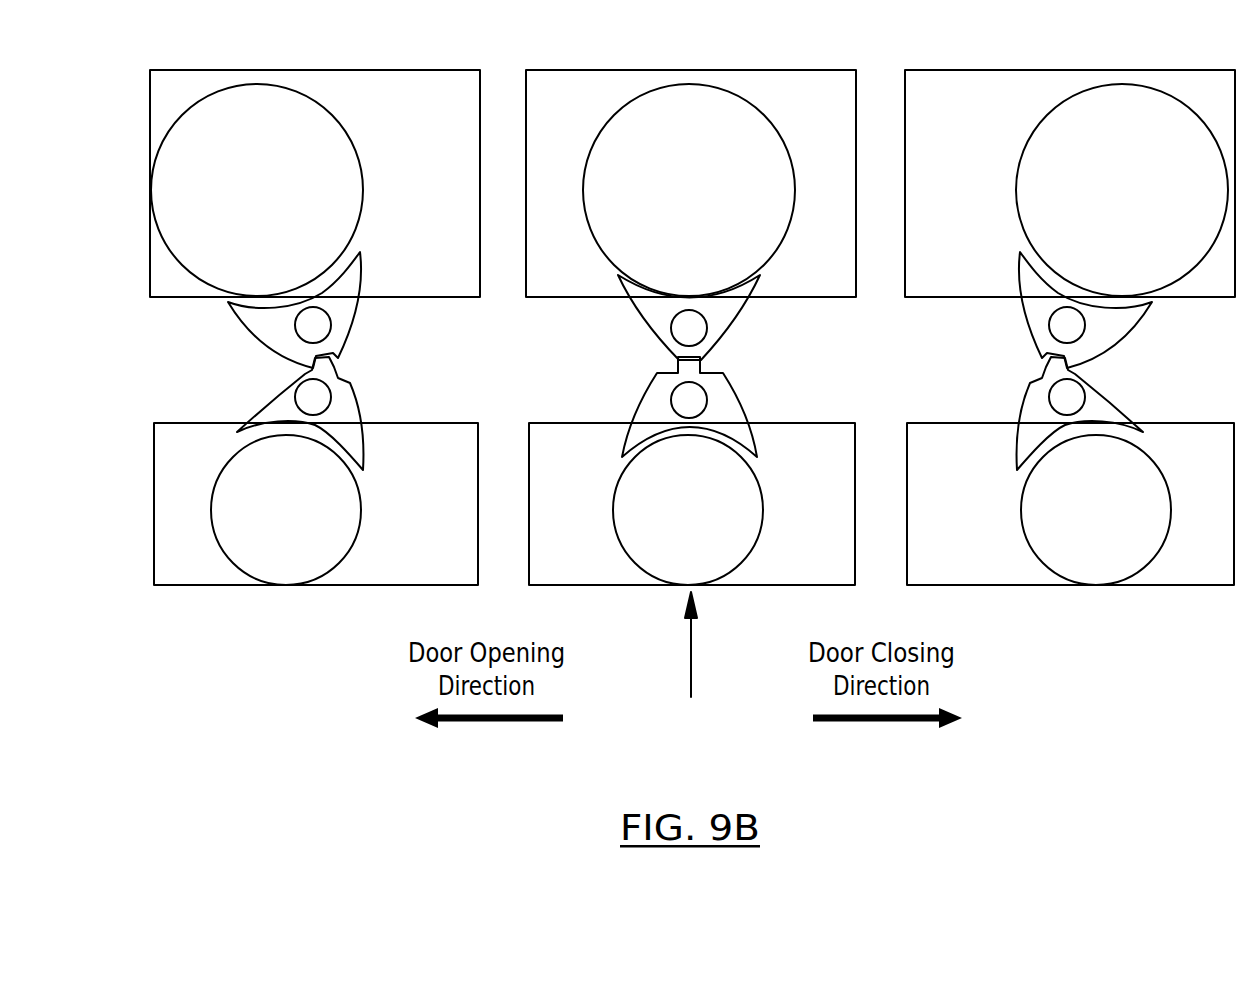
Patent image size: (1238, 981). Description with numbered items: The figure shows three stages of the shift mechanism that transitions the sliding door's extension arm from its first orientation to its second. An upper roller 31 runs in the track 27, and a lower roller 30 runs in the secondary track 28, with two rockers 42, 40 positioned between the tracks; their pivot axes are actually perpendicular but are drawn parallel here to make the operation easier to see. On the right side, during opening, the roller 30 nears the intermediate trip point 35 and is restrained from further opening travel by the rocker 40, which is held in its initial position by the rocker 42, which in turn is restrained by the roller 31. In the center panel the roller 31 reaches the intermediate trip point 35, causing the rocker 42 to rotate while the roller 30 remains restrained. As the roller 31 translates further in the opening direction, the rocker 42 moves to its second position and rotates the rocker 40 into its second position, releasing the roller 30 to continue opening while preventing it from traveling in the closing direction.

The track 27 is at (547, 90).
The roller 31 is at (630, 192).
The rocker 42 is at (650, 315).
The rocker 40 is at (650, 390).
The roller 30 is at (642, 507).
The secondary track 28 is at (572, 568).
The intermediate trip point 35 is at (690, 660).